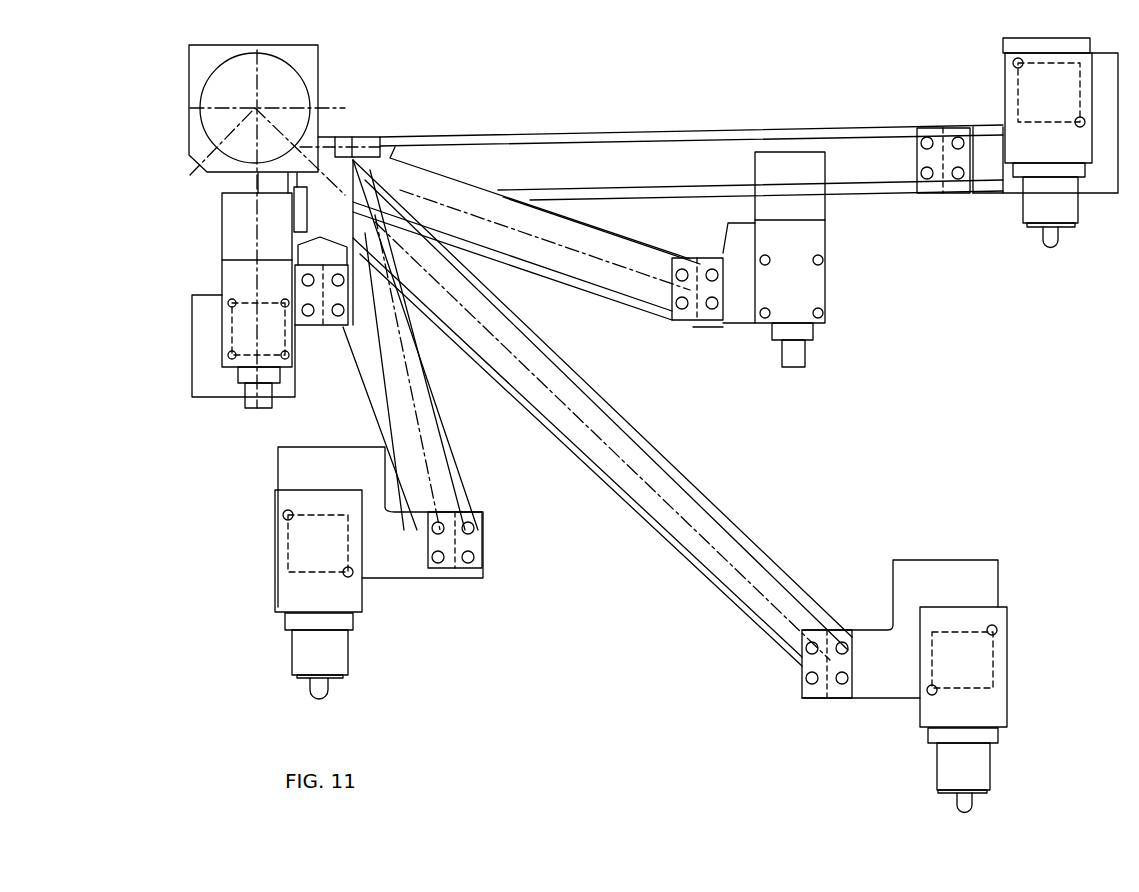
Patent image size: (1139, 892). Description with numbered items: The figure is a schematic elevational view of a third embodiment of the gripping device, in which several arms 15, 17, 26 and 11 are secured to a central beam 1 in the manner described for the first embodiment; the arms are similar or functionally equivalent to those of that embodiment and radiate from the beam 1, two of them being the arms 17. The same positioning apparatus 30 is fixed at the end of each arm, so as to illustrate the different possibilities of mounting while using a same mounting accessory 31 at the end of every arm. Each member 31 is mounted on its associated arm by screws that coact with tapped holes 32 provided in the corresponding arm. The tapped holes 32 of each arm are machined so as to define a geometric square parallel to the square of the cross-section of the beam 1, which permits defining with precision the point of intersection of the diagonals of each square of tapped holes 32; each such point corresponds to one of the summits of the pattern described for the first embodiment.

The beam 1 is at (315, 80).
The arm 11 is at (305, 222).
The arm 15 is at (735, 150).
The arm 17 is at (505, 215).
The arm 26 is at (678, 522).
The positioning apparatus 30 is at (1028, 140).
The mounting accessory 31 is at (953, 777).
The tapped holes 32 is at (338, 310).